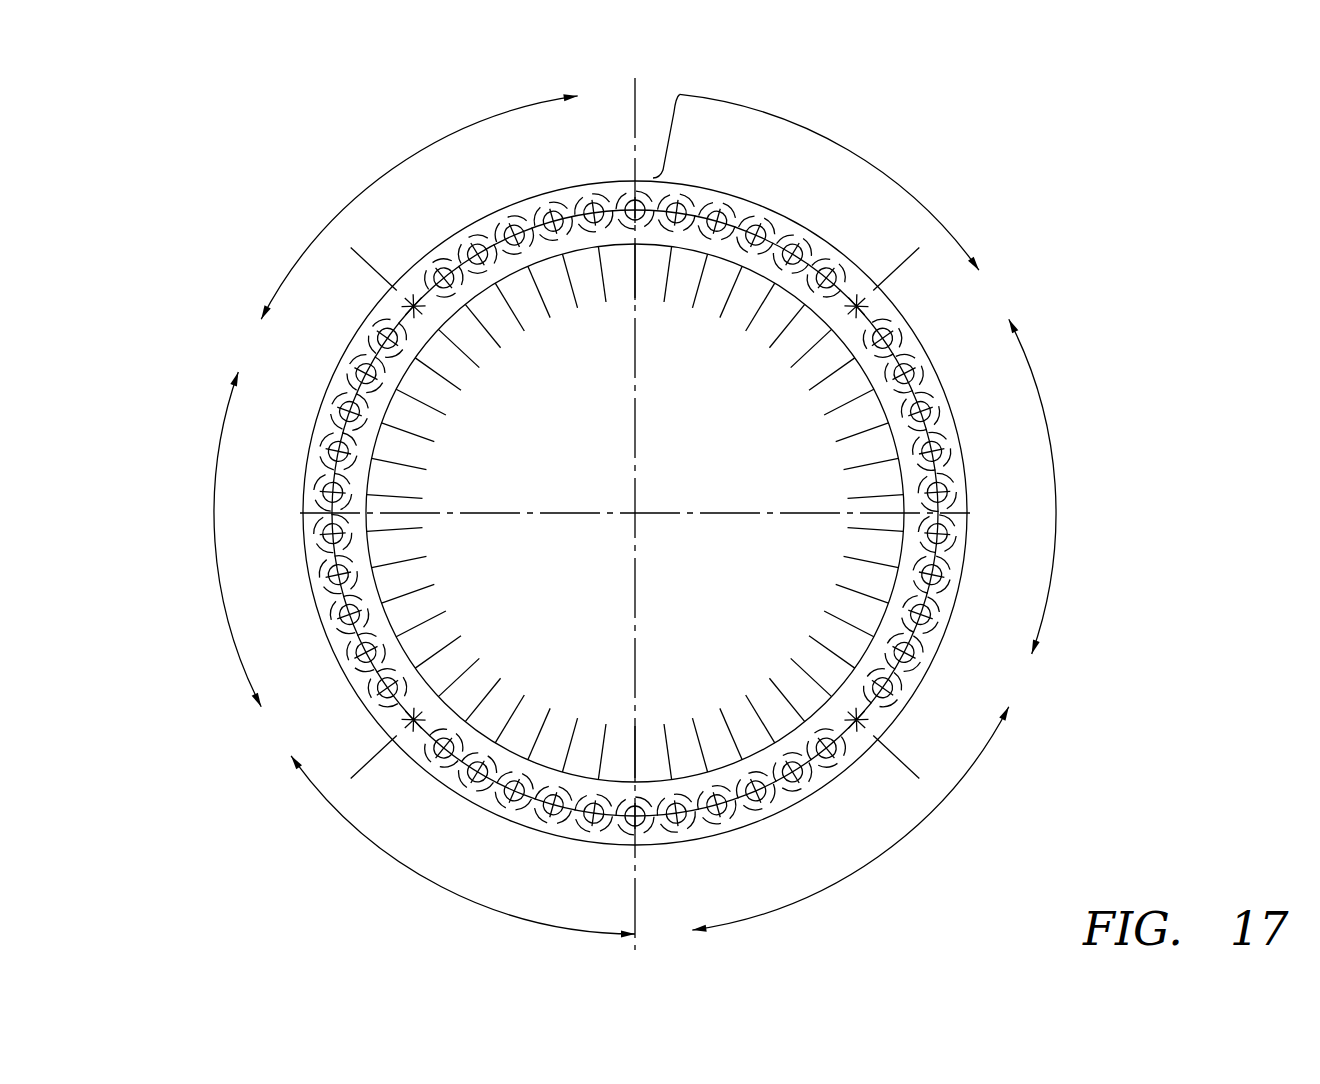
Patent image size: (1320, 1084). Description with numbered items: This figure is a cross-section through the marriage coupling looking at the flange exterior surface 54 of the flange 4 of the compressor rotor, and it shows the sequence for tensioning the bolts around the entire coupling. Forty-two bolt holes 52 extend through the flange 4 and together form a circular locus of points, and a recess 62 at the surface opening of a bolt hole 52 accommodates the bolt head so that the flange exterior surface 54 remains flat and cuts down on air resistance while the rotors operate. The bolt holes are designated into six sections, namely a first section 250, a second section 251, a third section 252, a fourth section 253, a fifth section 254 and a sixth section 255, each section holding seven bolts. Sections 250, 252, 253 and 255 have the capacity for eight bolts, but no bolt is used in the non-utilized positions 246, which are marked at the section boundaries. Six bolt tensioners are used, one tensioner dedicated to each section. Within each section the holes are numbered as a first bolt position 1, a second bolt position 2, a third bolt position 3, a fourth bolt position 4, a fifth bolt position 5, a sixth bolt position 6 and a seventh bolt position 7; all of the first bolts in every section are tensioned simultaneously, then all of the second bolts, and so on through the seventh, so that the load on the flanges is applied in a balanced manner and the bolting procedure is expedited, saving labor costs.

The first bolt position 1 is at (634, 513).
The second bolt position 2 is at (635, 513).
The third bolt position 3 is at (635, 513).
The flange 4 is at (748, 200).
The fifth bolt position 5 is at (635, 513).
The sixth bolt position 6 is at (635, 513).
The seventh bolt position 7 is at (635, 513).
The flange exterior surface 54 is at (641, 93).
The recess 62 is at (847, 237).
The bolt hole 52 is at (845, 272).
The non-utilized position 246 is at (860, 304).
The first section 250 is at (817, 183).
The second section 251 is at (1068, 486).
The third section 252 is at (852, 819).
The fourth section 253 is at (461, 846).
The fifth section 254 is at (209, 539).
The sixth section 255 is at (418, 206).